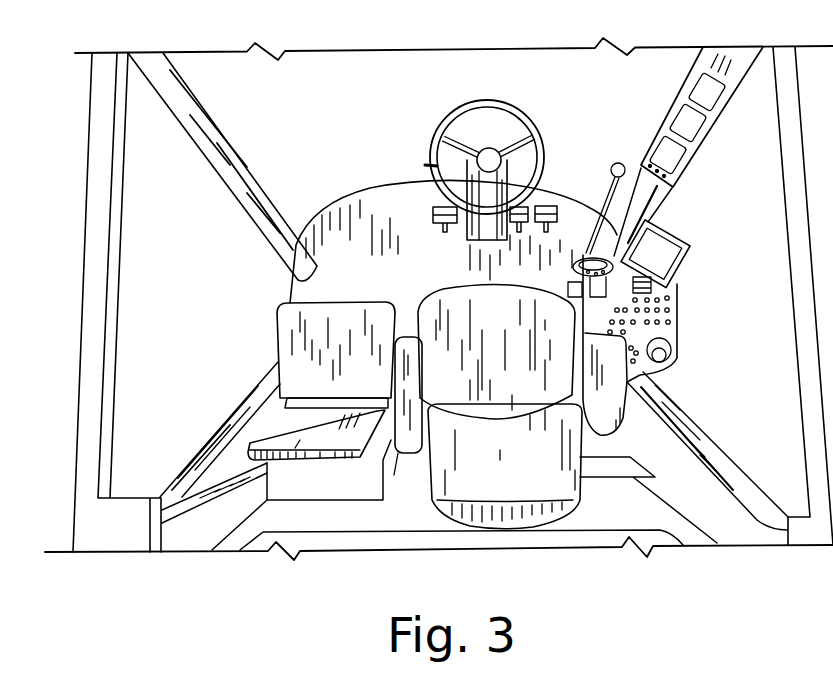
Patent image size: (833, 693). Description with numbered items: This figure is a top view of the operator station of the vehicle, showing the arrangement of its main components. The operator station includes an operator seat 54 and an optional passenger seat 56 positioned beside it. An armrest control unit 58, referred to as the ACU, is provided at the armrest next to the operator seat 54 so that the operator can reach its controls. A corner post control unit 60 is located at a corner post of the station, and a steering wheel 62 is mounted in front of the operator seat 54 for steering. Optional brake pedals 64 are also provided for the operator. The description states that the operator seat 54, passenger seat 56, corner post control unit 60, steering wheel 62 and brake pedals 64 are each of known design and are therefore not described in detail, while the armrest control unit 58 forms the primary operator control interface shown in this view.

The operator seat 54 is at (510, 483).
The passenger seat 56 is at (302, 424).
The armrest control unit 58 is at (692, 312).
The corner post control unit 60 is at (672, 113).
The steering wheel 62 is at (457, 118).
The brake pedals 64 is at (547, 207).